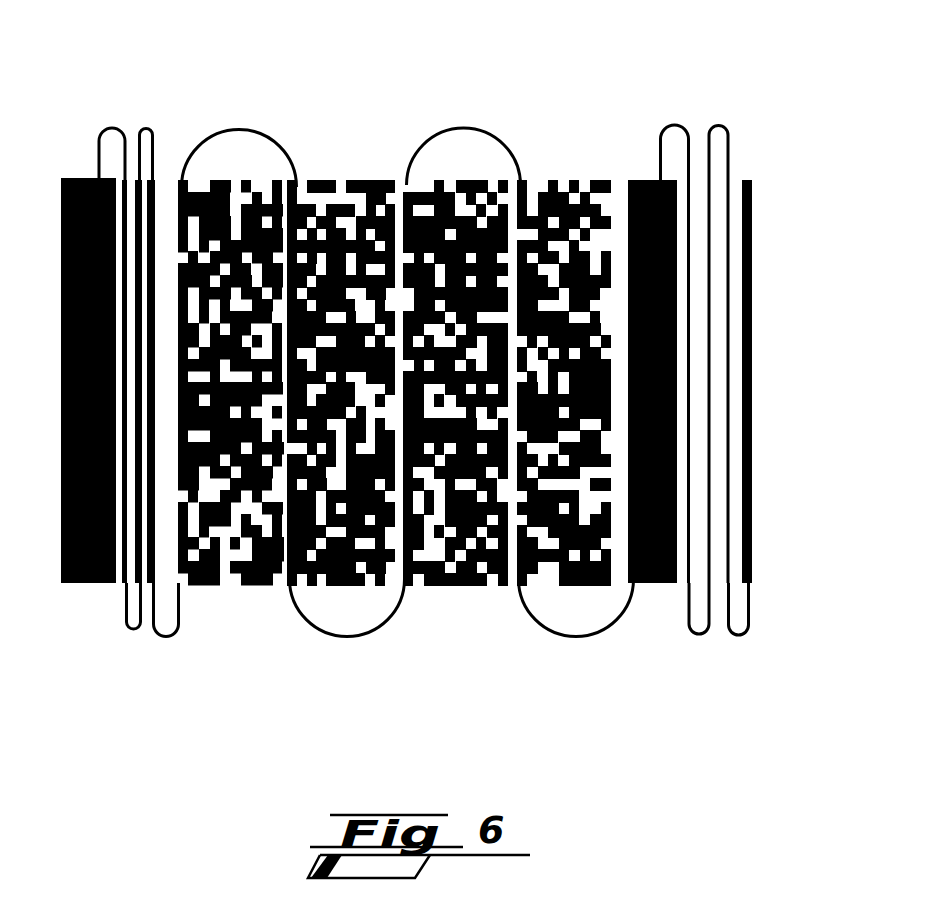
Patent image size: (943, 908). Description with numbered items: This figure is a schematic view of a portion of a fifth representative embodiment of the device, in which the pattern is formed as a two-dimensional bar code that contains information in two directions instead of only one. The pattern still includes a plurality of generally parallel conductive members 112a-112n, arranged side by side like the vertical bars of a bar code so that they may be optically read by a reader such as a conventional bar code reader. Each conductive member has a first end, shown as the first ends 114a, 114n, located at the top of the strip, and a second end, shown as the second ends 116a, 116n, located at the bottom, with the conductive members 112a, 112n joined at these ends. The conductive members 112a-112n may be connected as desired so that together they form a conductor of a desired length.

The conductive member 112a is at (52, 522).
The conductive member 112n is at (756, 414).
The first end 114a is at (61, 202).
The first end 114n is at (750, 183).
The second end 116a is at (82, 585).
The second end 116n is at (752, 558).